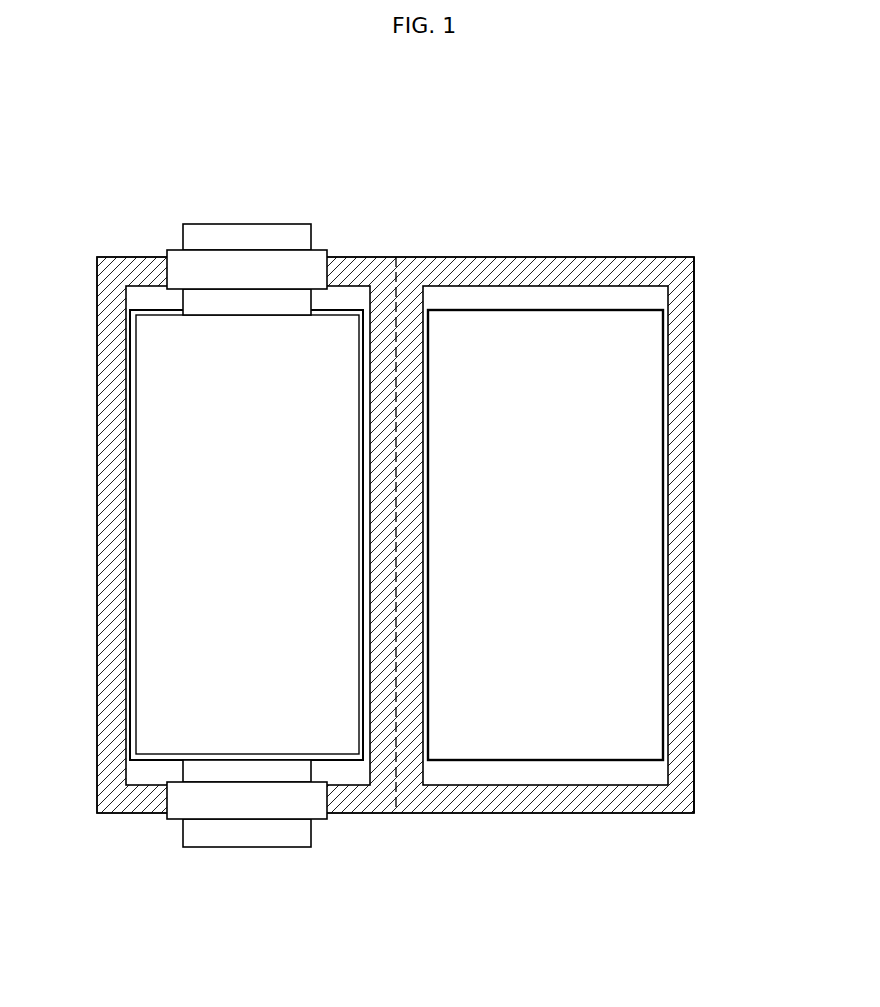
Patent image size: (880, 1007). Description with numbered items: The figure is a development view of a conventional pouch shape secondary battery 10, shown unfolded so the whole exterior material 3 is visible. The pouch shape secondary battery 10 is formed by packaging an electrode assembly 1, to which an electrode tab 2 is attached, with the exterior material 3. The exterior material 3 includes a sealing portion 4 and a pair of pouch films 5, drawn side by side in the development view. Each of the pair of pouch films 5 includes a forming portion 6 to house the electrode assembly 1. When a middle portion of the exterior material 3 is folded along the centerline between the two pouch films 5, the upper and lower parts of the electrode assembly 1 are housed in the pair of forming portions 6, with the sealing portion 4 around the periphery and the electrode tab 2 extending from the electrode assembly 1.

The pouch shape secondary battery 10 is at (78, 140).
The electrode assembly 1 is at (152, 615).
The electrode tab 2 is at (250, 228).
The exterior material 3 is at (708, 504).
The sealing portion 4 is at (694, 577).
The pouch film 5 is at (132, 773).
The forming portion 6 is at (130, 673).